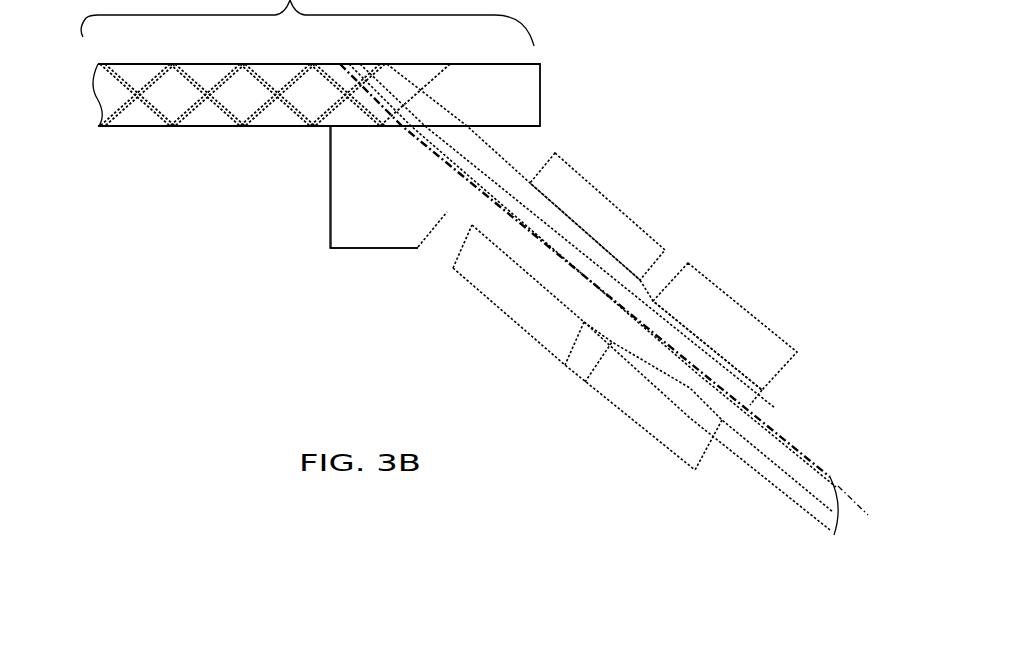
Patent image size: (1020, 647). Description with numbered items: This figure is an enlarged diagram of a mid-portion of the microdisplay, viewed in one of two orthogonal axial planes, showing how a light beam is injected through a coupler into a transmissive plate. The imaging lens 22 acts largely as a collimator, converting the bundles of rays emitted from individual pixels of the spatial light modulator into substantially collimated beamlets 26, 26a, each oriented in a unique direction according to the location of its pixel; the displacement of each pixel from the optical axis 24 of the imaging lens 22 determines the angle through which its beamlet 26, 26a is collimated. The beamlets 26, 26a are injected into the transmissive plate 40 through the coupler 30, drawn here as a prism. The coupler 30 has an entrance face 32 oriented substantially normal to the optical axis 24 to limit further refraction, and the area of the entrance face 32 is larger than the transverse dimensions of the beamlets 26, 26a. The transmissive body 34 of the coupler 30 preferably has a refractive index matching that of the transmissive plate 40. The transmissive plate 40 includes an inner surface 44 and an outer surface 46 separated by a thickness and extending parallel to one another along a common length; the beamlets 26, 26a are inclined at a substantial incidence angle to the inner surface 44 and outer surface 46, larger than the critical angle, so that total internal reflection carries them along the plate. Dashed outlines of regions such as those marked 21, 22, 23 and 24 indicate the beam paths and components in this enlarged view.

The cell 21 is at (643, 417).
The imaging lens 22 is at (812, 334).
The cell 23 is at (545, 328).
The optical axis 24 is at (847, 493).
The beamlet 26 is at (510, 157).
The beamlet 26a is at (460, 236).
The coupler 30 is at (318, 213).
The entrance face 32 is at (436, 226).
The transmissive body 34 is at (358, 162).
The transmissive plate 40 is at (548, 79).
The inner surface 44 is at (212, 126).
The outer surface 46 is at (498, 68).